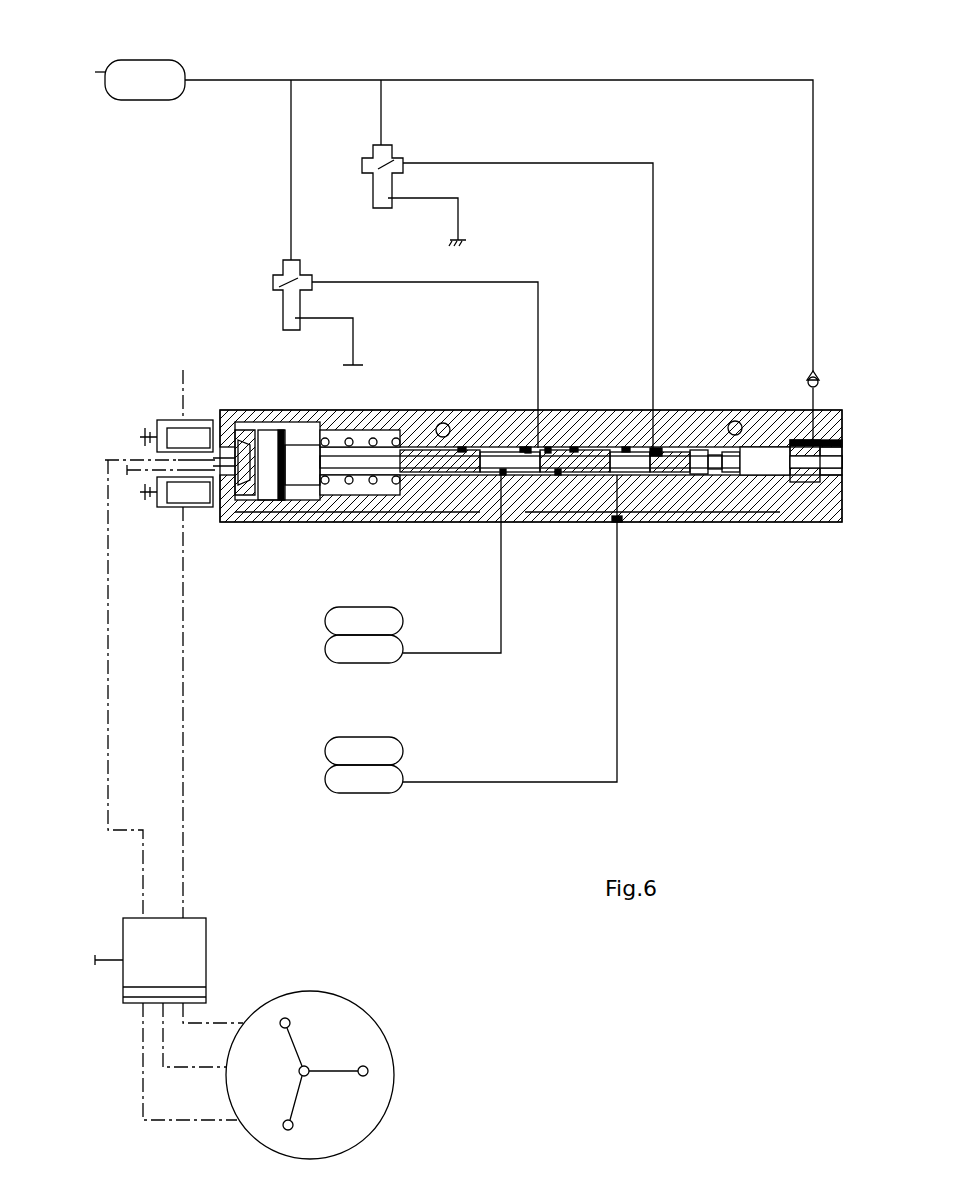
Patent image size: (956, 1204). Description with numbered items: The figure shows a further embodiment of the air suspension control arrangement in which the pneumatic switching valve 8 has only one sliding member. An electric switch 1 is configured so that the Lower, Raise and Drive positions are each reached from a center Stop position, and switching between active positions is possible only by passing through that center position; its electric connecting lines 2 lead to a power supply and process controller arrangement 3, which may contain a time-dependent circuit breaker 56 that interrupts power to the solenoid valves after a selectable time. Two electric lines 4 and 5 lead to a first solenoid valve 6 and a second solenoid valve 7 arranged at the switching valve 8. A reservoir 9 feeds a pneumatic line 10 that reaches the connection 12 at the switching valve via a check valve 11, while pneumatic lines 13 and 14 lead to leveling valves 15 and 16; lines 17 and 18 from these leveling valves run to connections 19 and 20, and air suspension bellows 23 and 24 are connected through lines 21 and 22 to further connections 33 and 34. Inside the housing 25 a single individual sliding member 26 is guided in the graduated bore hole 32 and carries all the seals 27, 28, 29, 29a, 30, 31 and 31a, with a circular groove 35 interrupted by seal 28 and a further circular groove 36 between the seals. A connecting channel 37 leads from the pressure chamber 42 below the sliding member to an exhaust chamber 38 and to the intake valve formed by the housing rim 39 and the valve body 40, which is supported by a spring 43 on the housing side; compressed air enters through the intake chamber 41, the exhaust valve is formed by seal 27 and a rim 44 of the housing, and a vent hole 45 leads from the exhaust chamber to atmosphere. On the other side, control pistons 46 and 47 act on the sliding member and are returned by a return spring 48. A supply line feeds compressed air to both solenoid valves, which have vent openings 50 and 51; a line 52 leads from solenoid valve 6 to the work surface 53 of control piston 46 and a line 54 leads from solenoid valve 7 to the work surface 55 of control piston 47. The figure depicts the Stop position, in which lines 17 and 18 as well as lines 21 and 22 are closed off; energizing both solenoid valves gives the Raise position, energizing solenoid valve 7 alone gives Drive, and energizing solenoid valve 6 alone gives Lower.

The electric switch 1 is at (379, 1014).
The electric connecting lines 2 is at (143, 1082).
The power supply and process controller arrangement 3 is at (146, 930).
The electric line 4 is at (183, 717).
The electric line 5 is at (108, 717).
The first solenoid valve 6 is at (160, 513).
The second solenoid valve 7 is at (157, 413).
The pneumatic switching valve 8 is at (412, 408).
The reservoir 9 is at (142, 77).
The pneumatic line 10 is at (463, 79).
The check valve 11 is at (818, 378).
The connection 12 is at (830, 415).
The pneumatic line 13 is at (290, 151).
The pneumatic line 14 is at (383, 122).
The leveling valve 15 is at (290, 282).
The leveling valve 16 is at (386, 167).
The line 17 is at (477, 280).
The line 18 is at (520, 163).
The connection 19 is at (541, 420).
The connection 20 is at (655, 418).
The line 21 is at (501, 623).
The line 22 is at (617, 623).
The air suspension bellows 23 is at (395, 623).
The air suspension bellows 24 is at (376, 786).
The housing 25 is at (458, 430).
The individual sliding member 26 is at (420, 472).
The circular seal 27 is at (437, 470).
The circular seal 28 is at (502, 474).
The circular seal 29 is at (548, 472).
The circular seal 29a is at (558, 445).
The circular seal 30 is at (588, 472).
The circular seal 31 is at (652, 475).
The circular seal 31a is at (680, 440).
The bore hole 32 is at (505, 445).
The connection 33 is at (546, 470).
The connection 34 is at (618, 522).
The circular groove 35 is at (526, 446).
The circular groove 36 is at (462, 445).
The connecting channel 37 is at (525, 470).
The exhaust chamber 38 is at (772, 462).
The housing rim 39 is at (790, 417).
The valve body 40 is at (817, 462).
The intake chamber 41 is at (843, 433).
The pressure chamber 42 is at (685, 472).
The spring 43 is at (700, 470).
The rim 44 is at (755, 470).
The vent hole 45 is at (818, 476).
The control piston 46 is at (325, 430).
The control piston 47 is at (265, 478).
The return spring 48 is at (363, 484).
The vent opening 50 is at (145, 495).
The vent opening 51 is at (143, 437).
The line 52 is at (217, 490).
The work surface 53 is at (170, 455).
The line 54 is at (247, 428).
The work surface 55 is at (250, 487).
The circuit breaker 56 is at (123, 992).